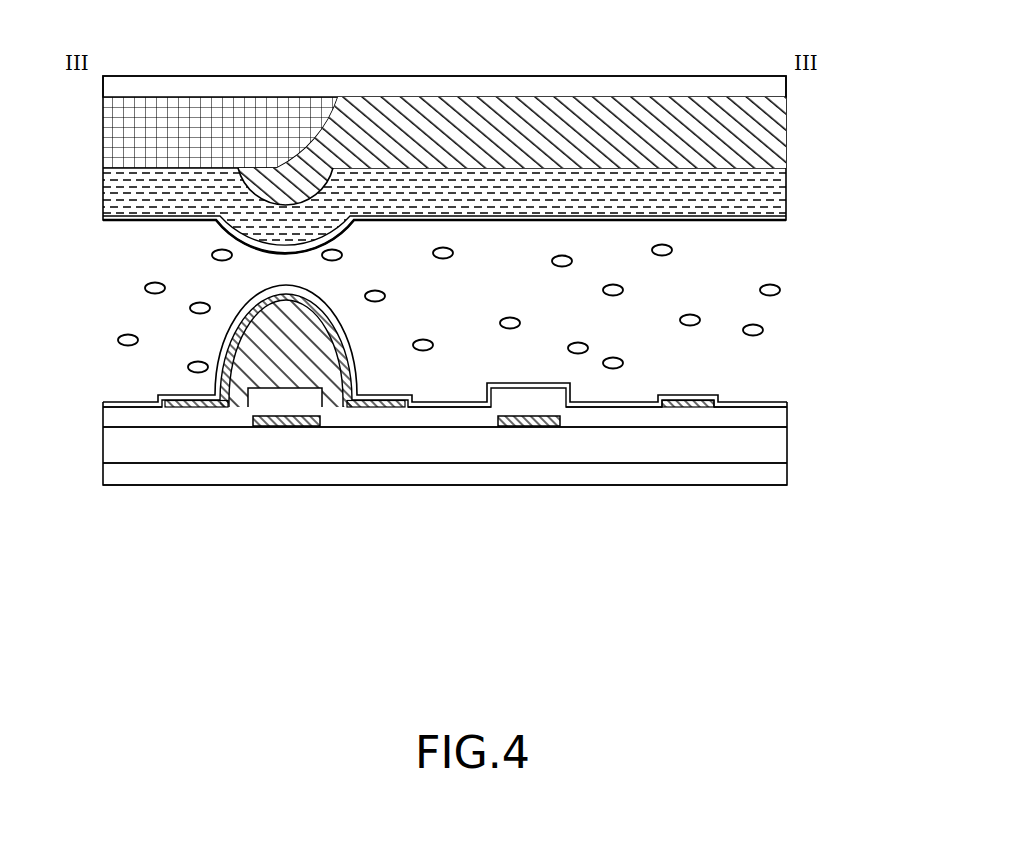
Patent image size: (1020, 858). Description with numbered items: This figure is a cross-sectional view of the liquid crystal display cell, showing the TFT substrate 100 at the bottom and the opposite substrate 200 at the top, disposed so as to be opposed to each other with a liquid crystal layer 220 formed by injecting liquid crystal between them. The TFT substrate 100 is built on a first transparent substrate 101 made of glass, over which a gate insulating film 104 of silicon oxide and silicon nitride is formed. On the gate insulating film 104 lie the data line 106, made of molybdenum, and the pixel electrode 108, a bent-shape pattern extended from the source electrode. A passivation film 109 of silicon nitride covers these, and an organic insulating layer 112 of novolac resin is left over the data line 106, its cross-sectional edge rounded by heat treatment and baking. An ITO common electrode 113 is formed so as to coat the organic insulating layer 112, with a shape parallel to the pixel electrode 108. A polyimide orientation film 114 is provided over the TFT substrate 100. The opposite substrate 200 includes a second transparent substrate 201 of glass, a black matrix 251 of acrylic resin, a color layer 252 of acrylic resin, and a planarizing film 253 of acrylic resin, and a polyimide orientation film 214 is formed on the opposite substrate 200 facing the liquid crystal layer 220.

The TFT substrate 100 is at (497, 583).
The first transparent substrate 101 is at (787, 473).
The gate insulating film 104 is at (787, 446).
The data line 106 is at (285, 427).
The pixel electrode 108 is at (523, 427).
The passivation film 109 is at (787, 416).
The organic insulating layer 112 is at (317, 342).
The common electrode 113 is at (377, 408).
The orientation film 114 is at (750, 398).
The opposite substrate 200 is at (512, 35).
The second transparent substrate 201 is at (787, 84).
The orientation film 214 is at (724, 221).
The liquid crystal layer 220 is at (789, 222).
The black matrix 251 is at (271, 97).
The color layer 252 is at (642, 97).
The planarizing film 253 is at (787, 192).